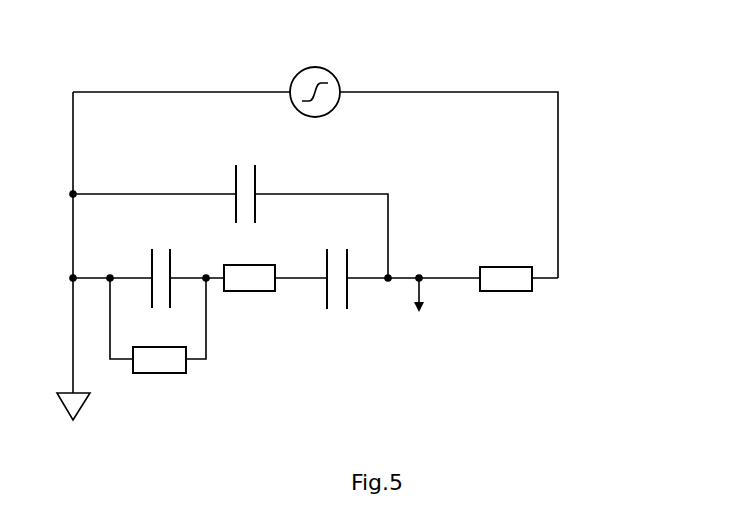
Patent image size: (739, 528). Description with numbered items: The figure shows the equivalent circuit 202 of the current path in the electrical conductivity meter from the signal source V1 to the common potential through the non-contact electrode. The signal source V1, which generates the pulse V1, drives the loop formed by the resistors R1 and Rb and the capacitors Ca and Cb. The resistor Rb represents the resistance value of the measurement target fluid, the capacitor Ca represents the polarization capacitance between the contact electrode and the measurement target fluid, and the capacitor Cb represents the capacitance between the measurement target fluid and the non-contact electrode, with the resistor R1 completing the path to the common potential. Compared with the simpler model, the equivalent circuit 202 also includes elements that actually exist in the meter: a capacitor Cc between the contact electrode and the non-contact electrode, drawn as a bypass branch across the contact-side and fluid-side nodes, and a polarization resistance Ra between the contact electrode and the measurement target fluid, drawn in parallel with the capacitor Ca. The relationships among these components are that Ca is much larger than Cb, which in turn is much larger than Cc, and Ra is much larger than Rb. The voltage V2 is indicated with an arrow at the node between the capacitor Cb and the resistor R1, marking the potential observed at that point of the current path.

The equivalent circuit 202 is at (566, 39).
The signal source V1 is at (315, 83).
The output voltage V2 is at (419, 307).
The capacitor Cc is at (245, 184).
The capacitor Ca is at (161, 267).
The capacitor Cb is at (337, 268).
The polarization resistance Ra is at (158, 325).
The resistor Rb is at (249, 266).
The resistor R1 is at (506, 268).